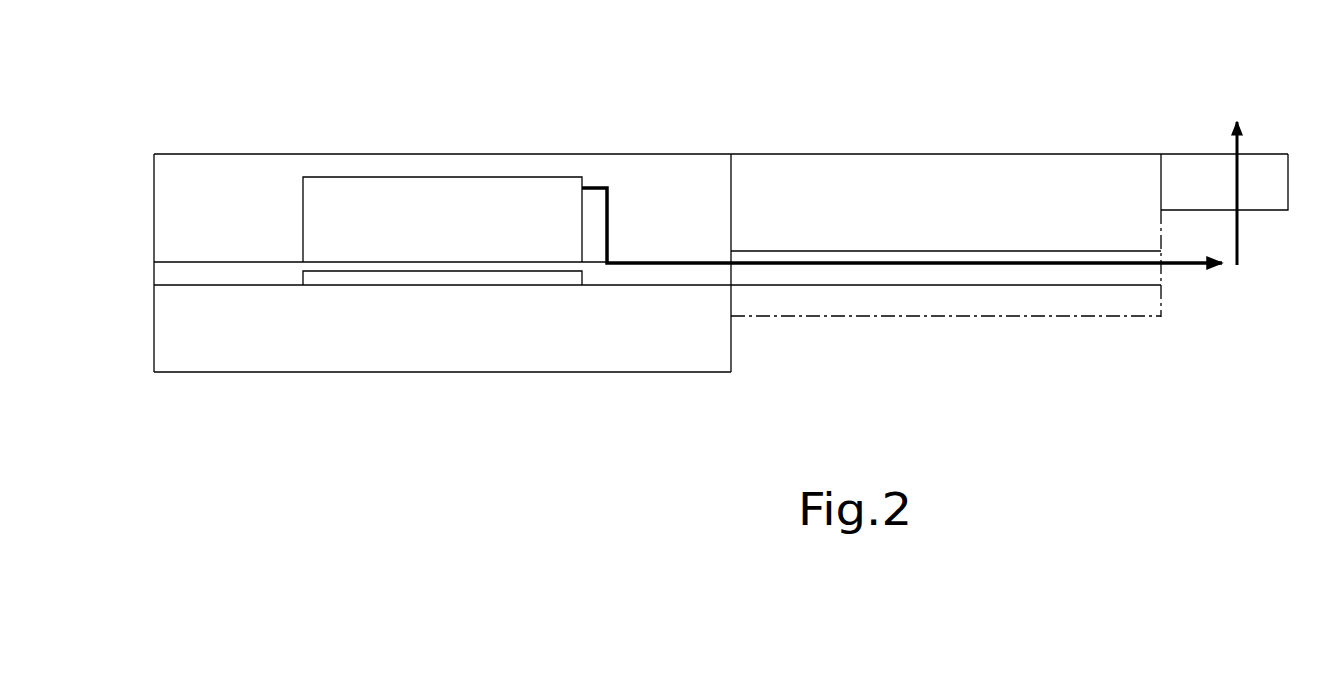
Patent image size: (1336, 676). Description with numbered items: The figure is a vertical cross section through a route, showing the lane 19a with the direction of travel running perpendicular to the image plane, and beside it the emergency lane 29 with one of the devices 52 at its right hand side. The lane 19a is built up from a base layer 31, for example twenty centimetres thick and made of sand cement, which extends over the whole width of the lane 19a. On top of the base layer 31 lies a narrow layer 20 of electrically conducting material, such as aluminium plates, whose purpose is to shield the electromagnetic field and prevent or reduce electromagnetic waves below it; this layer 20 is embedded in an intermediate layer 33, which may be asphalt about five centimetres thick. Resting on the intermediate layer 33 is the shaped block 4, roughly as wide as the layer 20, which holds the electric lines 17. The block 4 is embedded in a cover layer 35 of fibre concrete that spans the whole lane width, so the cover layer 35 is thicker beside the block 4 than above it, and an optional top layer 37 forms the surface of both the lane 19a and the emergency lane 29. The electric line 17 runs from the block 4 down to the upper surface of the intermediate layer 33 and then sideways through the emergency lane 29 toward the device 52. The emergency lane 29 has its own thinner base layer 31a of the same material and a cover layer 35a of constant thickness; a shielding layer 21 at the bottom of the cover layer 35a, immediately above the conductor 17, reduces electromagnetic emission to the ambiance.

The shaped block 4 is at (535, 193).
The electric line 17 is at (607, 208).
The lane 19a is at (340, 128).
The layer of electrically conducting material 20 is at (352, 277).
The shielding layer 21 is at (880, 257).
The emergency lane 29 is at (905, 130).
The base layer 31 is at (547, 348).
The base layer of emergency lane 31a is at (983, 298).
The intermediate layer 33 is at (170, 274).
The cover layer 35 is at (170, 170).
The cover layer of emergency lane 35a is at (1107, 214).
The top layer 37 is at (230, 152).
The device 52 is at (1258, 153).